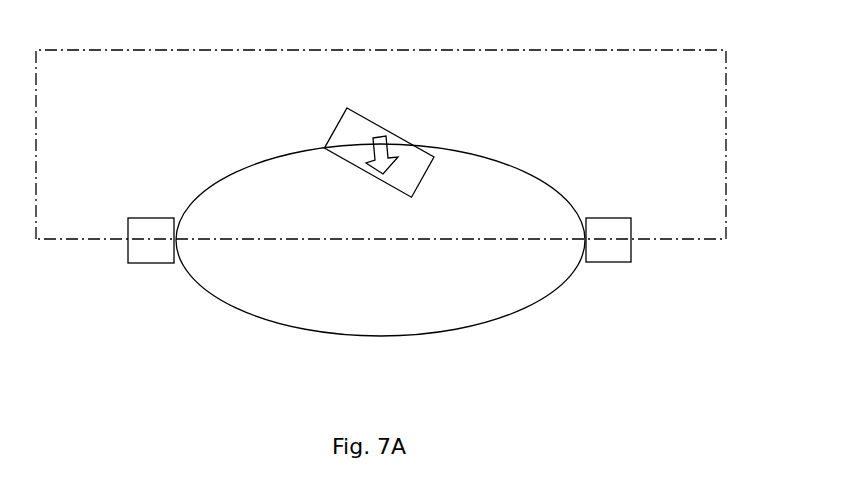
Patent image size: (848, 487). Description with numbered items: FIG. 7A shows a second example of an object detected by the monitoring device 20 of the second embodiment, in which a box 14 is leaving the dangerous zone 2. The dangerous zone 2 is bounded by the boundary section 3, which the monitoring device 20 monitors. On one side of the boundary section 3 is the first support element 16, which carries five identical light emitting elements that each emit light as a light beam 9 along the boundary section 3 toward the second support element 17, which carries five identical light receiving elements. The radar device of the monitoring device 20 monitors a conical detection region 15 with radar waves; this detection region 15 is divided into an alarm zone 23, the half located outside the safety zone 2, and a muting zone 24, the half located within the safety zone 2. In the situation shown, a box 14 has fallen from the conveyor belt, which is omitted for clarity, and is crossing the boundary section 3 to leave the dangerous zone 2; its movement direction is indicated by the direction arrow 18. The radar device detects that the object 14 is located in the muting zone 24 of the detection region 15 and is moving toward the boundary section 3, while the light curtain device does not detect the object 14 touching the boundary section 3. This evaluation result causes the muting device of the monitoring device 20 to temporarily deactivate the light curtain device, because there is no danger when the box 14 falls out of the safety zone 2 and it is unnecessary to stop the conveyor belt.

The dangerous zone 2 is at (727, 70).
The boundary section 3 is at (497, 237).
The light beam 9 is at (532, 237).
The box 14 is at (345, 136).
The detection region 15 is at (497, 322).
The first support element 16 is at (136, 253).
The second support element 17 is at (602, 252).
The direction arrow 18 is at (388, 156).
The monitoring device 20 is at (610, 188).
The alarm zone 23 is at (326, 312).
The muting zone 24 is at (448, 168).